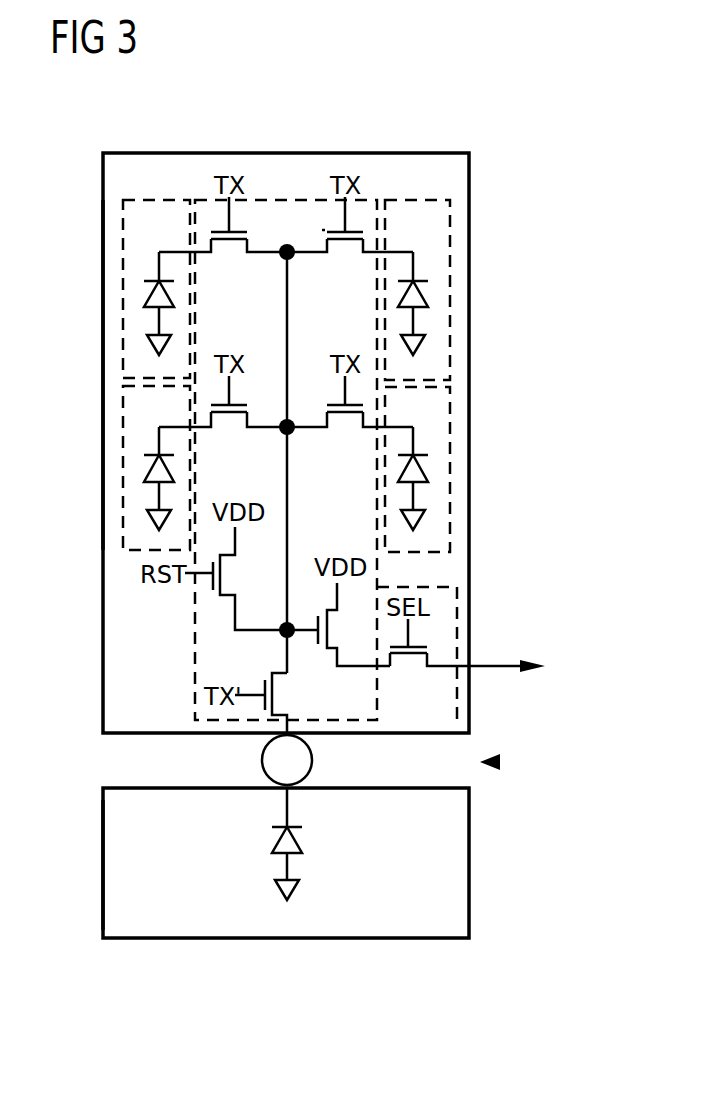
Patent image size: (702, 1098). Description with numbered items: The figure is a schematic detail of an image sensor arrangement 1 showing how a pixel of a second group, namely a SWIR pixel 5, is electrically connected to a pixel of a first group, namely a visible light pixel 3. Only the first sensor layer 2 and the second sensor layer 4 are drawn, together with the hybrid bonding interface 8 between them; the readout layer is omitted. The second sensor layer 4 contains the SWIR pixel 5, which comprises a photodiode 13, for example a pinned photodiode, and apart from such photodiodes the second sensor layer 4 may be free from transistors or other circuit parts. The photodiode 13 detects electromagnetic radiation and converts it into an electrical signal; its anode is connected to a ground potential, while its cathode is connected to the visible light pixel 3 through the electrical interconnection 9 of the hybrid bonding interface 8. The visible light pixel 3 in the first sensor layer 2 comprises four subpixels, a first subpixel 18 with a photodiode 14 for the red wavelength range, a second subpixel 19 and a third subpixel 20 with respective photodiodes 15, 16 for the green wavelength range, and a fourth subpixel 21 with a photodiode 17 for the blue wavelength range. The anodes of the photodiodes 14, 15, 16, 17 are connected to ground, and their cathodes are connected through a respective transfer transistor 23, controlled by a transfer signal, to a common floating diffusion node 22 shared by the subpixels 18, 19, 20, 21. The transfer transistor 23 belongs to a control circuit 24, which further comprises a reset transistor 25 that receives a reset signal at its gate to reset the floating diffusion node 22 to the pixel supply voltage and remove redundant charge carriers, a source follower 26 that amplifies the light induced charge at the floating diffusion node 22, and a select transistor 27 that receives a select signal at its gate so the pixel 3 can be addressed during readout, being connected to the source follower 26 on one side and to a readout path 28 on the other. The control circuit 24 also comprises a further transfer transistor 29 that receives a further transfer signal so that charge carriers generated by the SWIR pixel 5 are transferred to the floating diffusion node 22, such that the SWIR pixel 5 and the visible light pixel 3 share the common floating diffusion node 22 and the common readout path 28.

The image sensor 1 is at (488, 117).
The first sensor layer 2 is at (103, 370).
The pixel of the first group 3 is at (112, 637).
The second sensor layer 4 is at (103, 862).
The pixel of the second group 5 is at (113, 828).
The hybrid bonding interface 8 is at (496, 762).
The electrical interconnection 9 is at (312, 762).
The photodiode 13 is at (300, 840).
The photodiode 14 is at (148, 292).
The photodiode 15 is at (425, 292).
The photodiode 16 is at (148, 468).
The photodiode 17 is at (425, 468).
The first subpixel 18 is at (123, 230).
The second subpixel 19 is at (450, 228).
The third subpixel 20 is at (123, 437).
The fourth subpixel 21 is at (450, 415).
The floating diffusion node 22 is at (280, 258).
The transfer transistor 23 is at (323, 236).
The control circuit 24 is at (457, 685).
The reset transistor 25 is at (215, 600).
The source follower 26 is at (318, 650).
The select transistor 27 is at (425, 645).
The readout path 28 is at (522, 662).
The further transfer transistor 29 is at (265, 685).